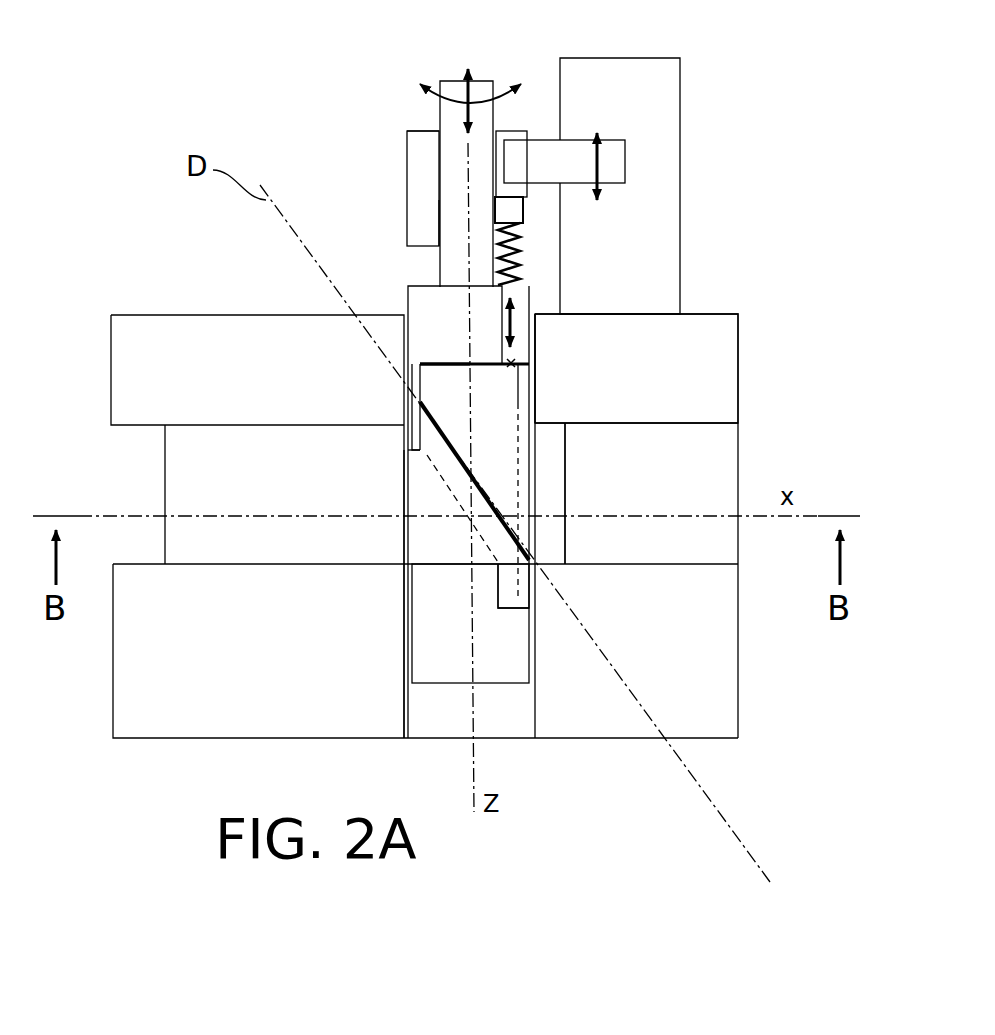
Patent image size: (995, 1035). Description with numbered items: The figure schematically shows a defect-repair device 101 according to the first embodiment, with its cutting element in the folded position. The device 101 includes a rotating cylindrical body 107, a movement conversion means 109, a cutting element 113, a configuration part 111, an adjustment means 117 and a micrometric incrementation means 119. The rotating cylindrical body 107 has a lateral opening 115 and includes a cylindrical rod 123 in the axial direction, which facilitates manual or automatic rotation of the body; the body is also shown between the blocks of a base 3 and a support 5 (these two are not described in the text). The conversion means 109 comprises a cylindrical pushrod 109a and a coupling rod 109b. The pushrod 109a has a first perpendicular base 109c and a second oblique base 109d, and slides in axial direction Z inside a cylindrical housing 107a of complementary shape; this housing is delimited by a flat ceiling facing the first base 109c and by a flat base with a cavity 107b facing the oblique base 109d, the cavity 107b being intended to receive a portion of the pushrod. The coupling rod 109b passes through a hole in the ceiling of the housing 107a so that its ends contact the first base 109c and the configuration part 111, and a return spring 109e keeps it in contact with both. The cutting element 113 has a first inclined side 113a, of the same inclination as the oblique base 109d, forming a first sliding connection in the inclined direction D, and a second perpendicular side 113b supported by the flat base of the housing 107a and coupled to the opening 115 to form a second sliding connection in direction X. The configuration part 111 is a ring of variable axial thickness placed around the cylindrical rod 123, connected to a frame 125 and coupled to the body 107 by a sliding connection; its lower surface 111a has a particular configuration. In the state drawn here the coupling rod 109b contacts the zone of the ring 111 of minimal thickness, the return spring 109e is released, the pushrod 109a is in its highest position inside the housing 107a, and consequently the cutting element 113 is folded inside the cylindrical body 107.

The base 3 is at (708, 468).
The support fixture 5 is at (636, 308).
The defect-repair device 101 is at (398, 188).
The rotating cylindrical body 107 is at (408, 293).
The cylindrical housing 107a is at (435, 442).
The cavity 107b is at (510, 577).
The movement conversion means 109 is at (440, 393).
The cylindrical pushrod 109a is at (498, 398).
The coupling rod 109b is at (530, 298).
The first perpendicular base 109c is at (450, 363).
The second oblique base 109d is at (499, 520).
The return spring 109e is at (523, 232).
The configuration part 111 is at (405, 133).
The lower surface 111a is at (430, 252).
The cutting element 113 is at (430, 492).
The first inclined side 113a is at (504, 499).
The second perpendicular side 113b is at (430, 564).
The lateral opening 115 is at (407, 453).
The adjustment means 117 is at (477, 62).
The micrometric incrementation means 119 is at (585, 190).
The cylindrical rod 123 is at (440, 130).
The frame 125 is at (678, 72).